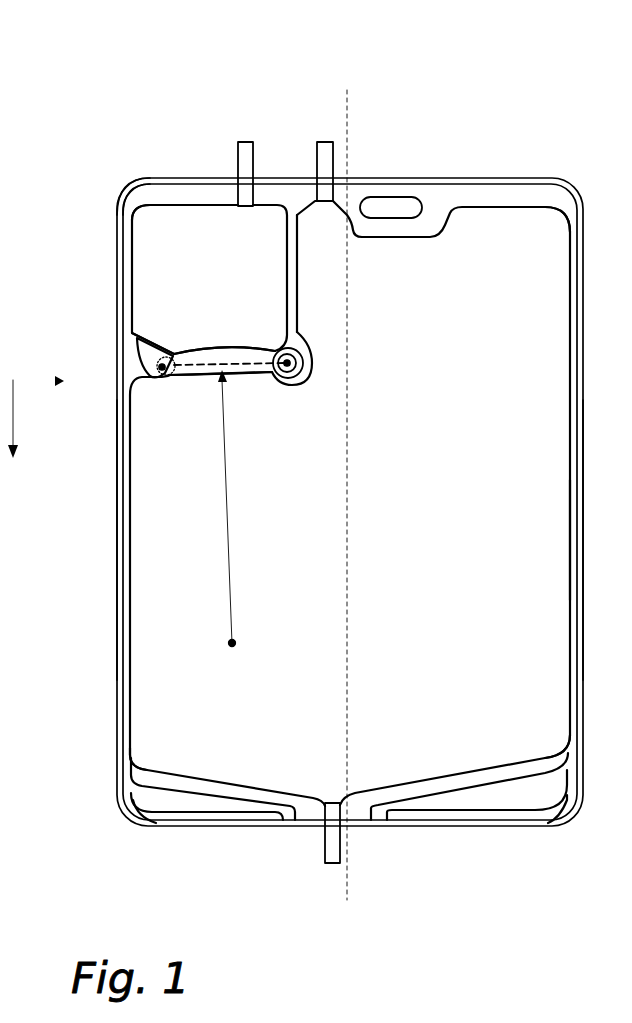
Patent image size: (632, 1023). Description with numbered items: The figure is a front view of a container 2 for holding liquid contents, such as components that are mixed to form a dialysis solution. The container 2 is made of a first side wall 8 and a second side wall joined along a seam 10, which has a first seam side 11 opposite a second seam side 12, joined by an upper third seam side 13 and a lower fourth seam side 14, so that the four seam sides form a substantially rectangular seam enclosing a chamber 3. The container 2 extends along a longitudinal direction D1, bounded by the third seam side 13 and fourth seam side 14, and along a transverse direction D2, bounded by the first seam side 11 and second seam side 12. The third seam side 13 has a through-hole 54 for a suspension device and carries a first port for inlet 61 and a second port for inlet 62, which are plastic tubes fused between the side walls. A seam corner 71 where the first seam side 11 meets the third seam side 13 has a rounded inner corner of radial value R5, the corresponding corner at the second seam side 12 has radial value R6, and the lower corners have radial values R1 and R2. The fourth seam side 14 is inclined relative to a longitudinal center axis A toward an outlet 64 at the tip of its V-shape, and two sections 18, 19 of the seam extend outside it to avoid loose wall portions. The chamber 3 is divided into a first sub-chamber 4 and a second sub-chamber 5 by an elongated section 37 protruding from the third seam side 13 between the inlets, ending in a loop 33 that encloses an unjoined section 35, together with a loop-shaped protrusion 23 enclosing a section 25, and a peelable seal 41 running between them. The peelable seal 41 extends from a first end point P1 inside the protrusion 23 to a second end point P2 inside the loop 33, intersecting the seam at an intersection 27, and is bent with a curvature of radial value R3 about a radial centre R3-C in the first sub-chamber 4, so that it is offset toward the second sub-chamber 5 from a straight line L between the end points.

The container 2 is at (104, 118).
The seam 10 is at (114, 194).
The third seam side 13 is at (180, 193).
The seam corner 71 is at (145, 193).
The first seam side 11 is at (120, 540).
The second seam side 12 is at (580, 628).
The second sub-chamber 5 is at (170, 268).
The second port for inlet 62 is at (249, 139).
The first port for inlet 61 is at (323, 139).
The radial value R5 is at (156, 218).
The elongated section 37 is at (287, 290).
The chamber 3 is at (535, 424).
The radial value R6 is at (548, 228).
The through-hole 54 is at (402, 214).
The first sub-chamber 4 is at (535, 545).
The first side wall 8 is at (433, 548).
The outlet 64 is at (340, 870).
The fourth seam side 14 is at (215, 765).
The section 18 is at (218, 825).
The section 19 is at (470, 820).
The radial value R1 is at (146, 746).
The radial value R2 is at (556, 740).
The section 25 is at (147, 345).
The protrusion 23 is at (168, 350).
The peelable seal 41 is at (210, 352).
The straight line L is at (250, 372).
The first end point P1 is at (160, 378).
The intersection 27 is at (178, 376).
The second end point P2 is at (300, 352).
The loop 33 is at (292, 380).
The section 35 is at (305, 368).
The radial value R3 is at (232, 460).
The radial centre R3-C is at (255, 666).
The longitudinal center axis A is at (348, 886).
The longitudinal direction D1 is at (16, 431).
The transverse direction D2 is at (69, 370).